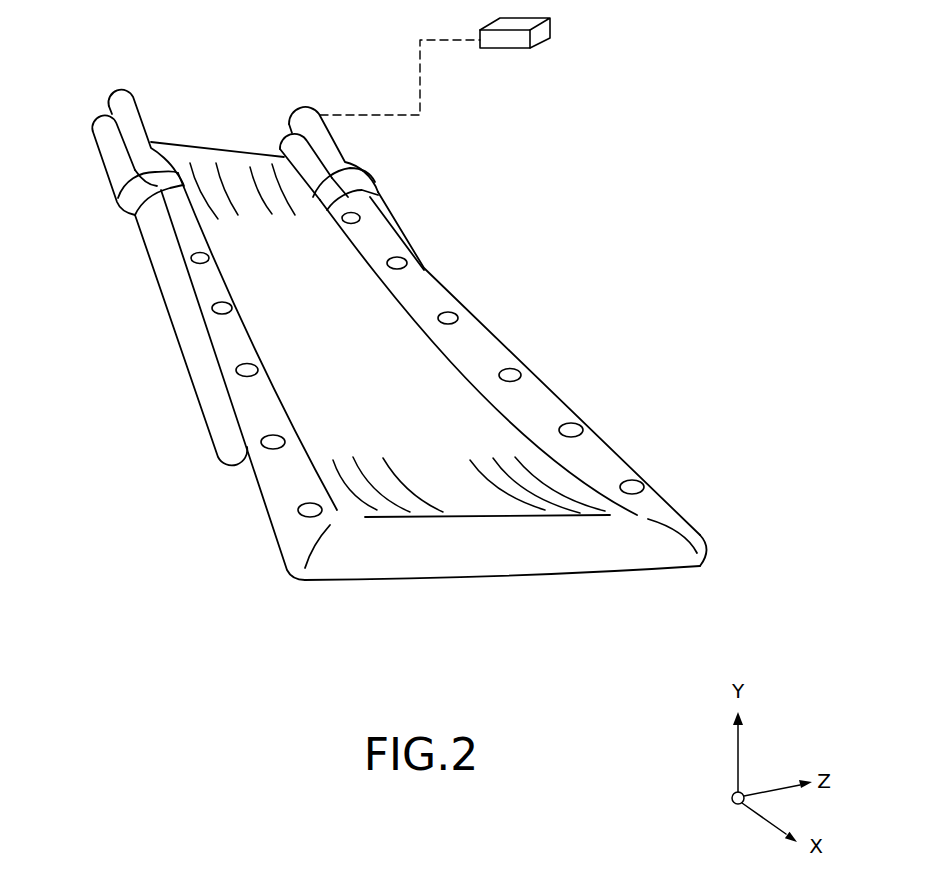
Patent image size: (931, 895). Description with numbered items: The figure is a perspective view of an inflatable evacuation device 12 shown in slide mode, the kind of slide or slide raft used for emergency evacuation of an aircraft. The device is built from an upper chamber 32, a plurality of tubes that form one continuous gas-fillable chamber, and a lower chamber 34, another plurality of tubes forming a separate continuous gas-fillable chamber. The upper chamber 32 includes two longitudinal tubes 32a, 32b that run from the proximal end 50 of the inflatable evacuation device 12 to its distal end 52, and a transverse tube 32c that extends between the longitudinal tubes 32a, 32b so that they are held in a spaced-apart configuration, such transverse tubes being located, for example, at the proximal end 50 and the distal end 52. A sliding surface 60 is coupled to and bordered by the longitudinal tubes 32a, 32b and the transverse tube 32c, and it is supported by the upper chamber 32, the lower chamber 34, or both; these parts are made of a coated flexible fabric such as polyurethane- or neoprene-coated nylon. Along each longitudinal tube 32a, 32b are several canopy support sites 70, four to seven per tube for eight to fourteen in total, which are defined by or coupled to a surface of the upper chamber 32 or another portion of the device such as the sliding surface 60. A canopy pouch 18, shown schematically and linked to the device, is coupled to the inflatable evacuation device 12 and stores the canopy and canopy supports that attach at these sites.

The inflatable evacuation device 12 is at (412, 319).
The canopy pouch 18 is at (517, 50).
The upper chamber 32 is at (119, 97).
The longitudinal tube 32a is at (225, 330).
The longitudinal tube 32b is at (483, 343).
The transverse tube 32c is at (557, 557).
The lower chamber 34 is at (105, 125).
The proximal end 50 is at (318, 92).
The distal end 52 is at (752, 554).
The sliding surface 60 is at (386, 391).
The canopy support sites 70 is at (196, 260).